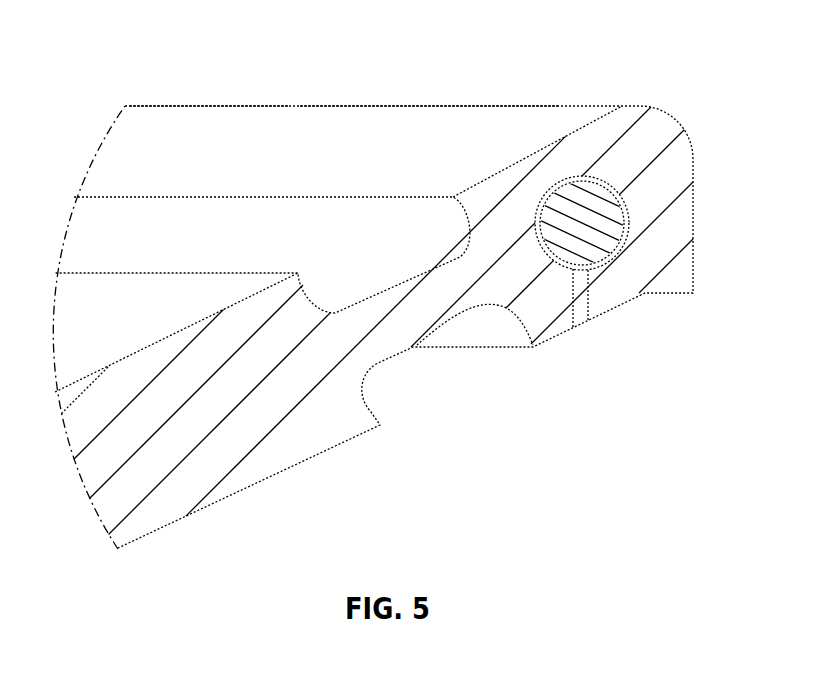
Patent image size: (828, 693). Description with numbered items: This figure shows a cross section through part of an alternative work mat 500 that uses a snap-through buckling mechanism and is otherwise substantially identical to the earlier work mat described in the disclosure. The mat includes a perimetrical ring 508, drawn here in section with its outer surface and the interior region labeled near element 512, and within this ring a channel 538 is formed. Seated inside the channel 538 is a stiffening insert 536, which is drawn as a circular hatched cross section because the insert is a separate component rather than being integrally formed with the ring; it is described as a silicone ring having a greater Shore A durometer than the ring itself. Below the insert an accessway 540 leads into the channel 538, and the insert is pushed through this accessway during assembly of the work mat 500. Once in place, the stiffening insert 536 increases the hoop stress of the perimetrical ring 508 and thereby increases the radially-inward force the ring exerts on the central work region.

The work mat 500 is at (597, 90).
The perimetrical ring 508 is at (443, 122).
The outer wall 512 is at (233, 92).
The stiffening insert 536 is at (605, 240).
The channel 538 is at (519, 310).
The accessway 540 is at (582, 303).